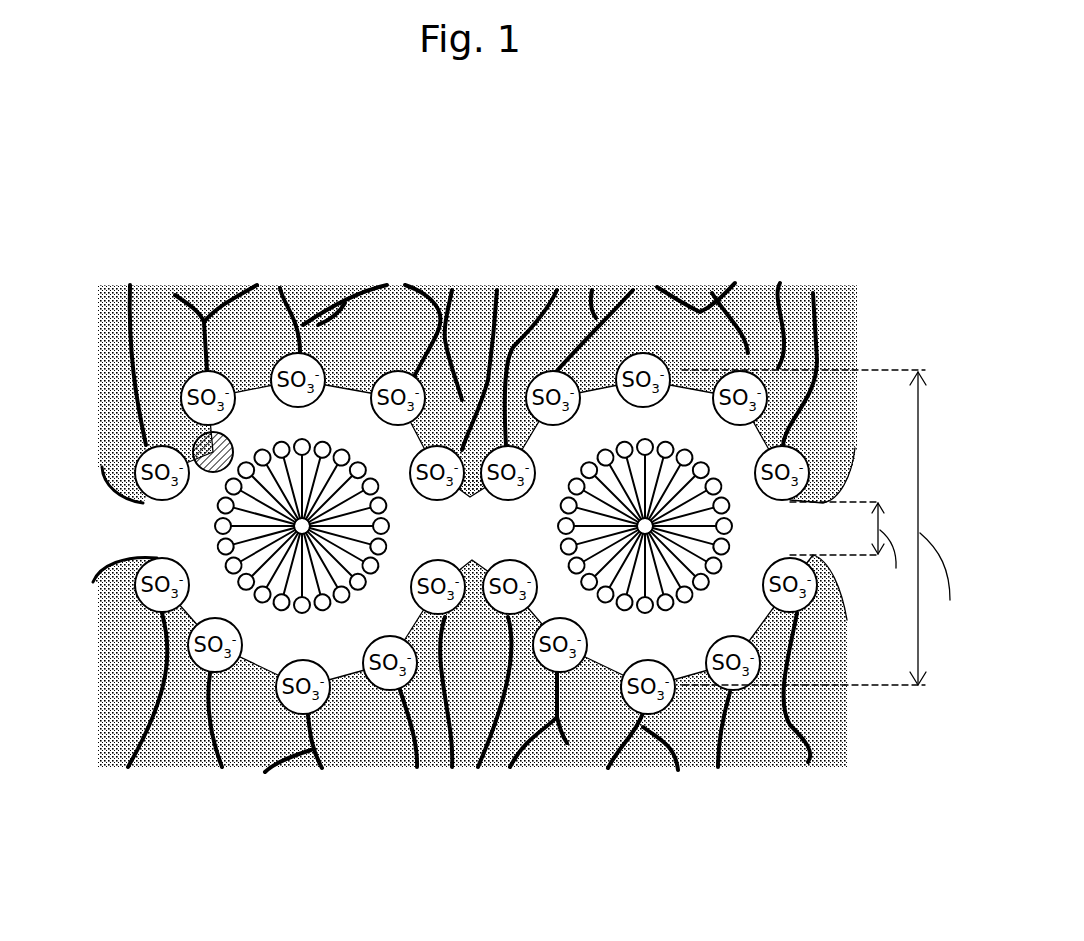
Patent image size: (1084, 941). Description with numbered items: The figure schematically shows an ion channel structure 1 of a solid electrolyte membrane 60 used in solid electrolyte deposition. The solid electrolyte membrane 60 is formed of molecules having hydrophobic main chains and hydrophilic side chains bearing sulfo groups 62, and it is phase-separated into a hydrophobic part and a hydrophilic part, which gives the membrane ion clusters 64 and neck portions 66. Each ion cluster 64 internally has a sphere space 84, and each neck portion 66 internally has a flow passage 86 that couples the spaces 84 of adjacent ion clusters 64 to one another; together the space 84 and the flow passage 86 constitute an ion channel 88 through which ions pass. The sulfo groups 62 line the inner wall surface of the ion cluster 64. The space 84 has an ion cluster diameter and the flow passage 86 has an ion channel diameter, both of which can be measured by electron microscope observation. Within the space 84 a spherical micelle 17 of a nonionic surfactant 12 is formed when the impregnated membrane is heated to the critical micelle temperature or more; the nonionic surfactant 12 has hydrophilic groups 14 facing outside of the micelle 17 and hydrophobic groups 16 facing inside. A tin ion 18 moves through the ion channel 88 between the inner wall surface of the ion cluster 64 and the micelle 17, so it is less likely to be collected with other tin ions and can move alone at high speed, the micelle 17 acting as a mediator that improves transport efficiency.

The ion channel structure 1 is at (864, 207).
The nonionic surfactant 12 is at (302, 401).
The hydrophilic groups 14 is at (283, 455).
The hydrophobic groups 16 is at (331, 456).
The micelle 17 is at (302, 508).
The tin ion 18 is at (196, 443).
The solid electrolyte membrane 60 is at (100, 372).
The sulfo groups 62 is at (135, 588).
The ion cluster 64 is at (426, 428).
The neck portion 66 is at (470, 496).
The space 84 is at (348, 648).
The flow passage 86 is at (467, 528).
The ion channel 88 is at (490, 664).